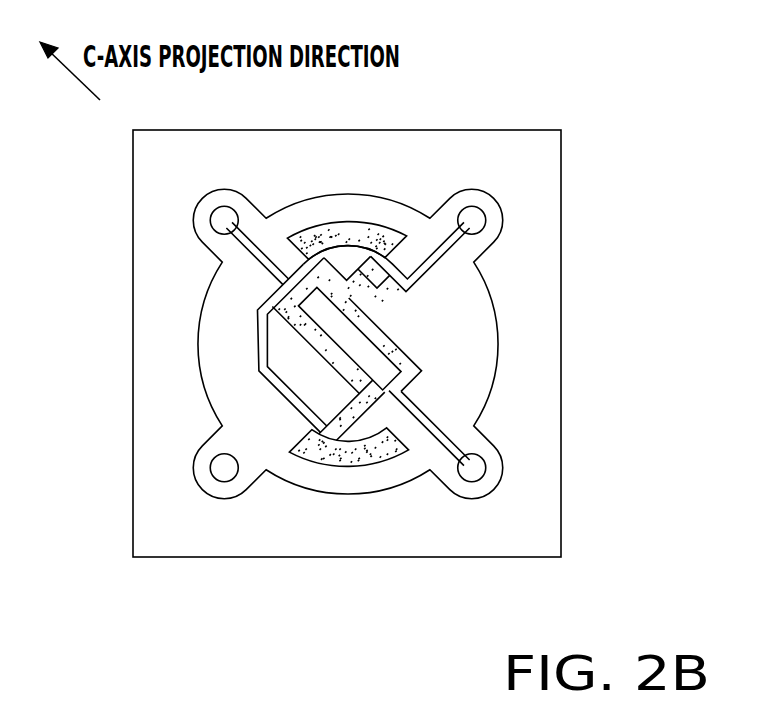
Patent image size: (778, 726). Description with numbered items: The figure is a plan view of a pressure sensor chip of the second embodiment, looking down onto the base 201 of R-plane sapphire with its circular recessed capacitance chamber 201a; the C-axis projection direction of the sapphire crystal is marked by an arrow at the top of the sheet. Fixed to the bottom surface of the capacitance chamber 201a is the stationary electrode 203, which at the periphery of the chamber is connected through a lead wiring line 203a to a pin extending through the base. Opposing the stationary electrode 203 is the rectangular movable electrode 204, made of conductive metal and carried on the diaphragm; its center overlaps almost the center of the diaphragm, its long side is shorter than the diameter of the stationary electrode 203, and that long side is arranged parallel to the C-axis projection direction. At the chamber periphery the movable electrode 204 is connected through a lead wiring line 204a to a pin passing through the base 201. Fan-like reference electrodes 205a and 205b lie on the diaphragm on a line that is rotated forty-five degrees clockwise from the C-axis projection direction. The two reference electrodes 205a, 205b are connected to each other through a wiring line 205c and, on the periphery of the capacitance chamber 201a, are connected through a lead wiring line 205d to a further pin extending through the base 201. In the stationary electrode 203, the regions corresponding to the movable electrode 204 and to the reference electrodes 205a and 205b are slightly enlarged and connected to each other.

The base 201 is at (541, 239).
The capacitance chamber 201a is at (358, 208).
The stationary electrode 203 is at (313, 231).
The lead wiring line 203a is at (250, 253).
The movable electrode 204 is at (338, 333).
The lead wiring line 204a is at (432, 418).
The reference electrode 205a is at (352, 261).
The reference electrode 205b is at (355, 423).
The wiring line 205c is at (277, 385).
The lead wiring line 205d is at (473, 260).